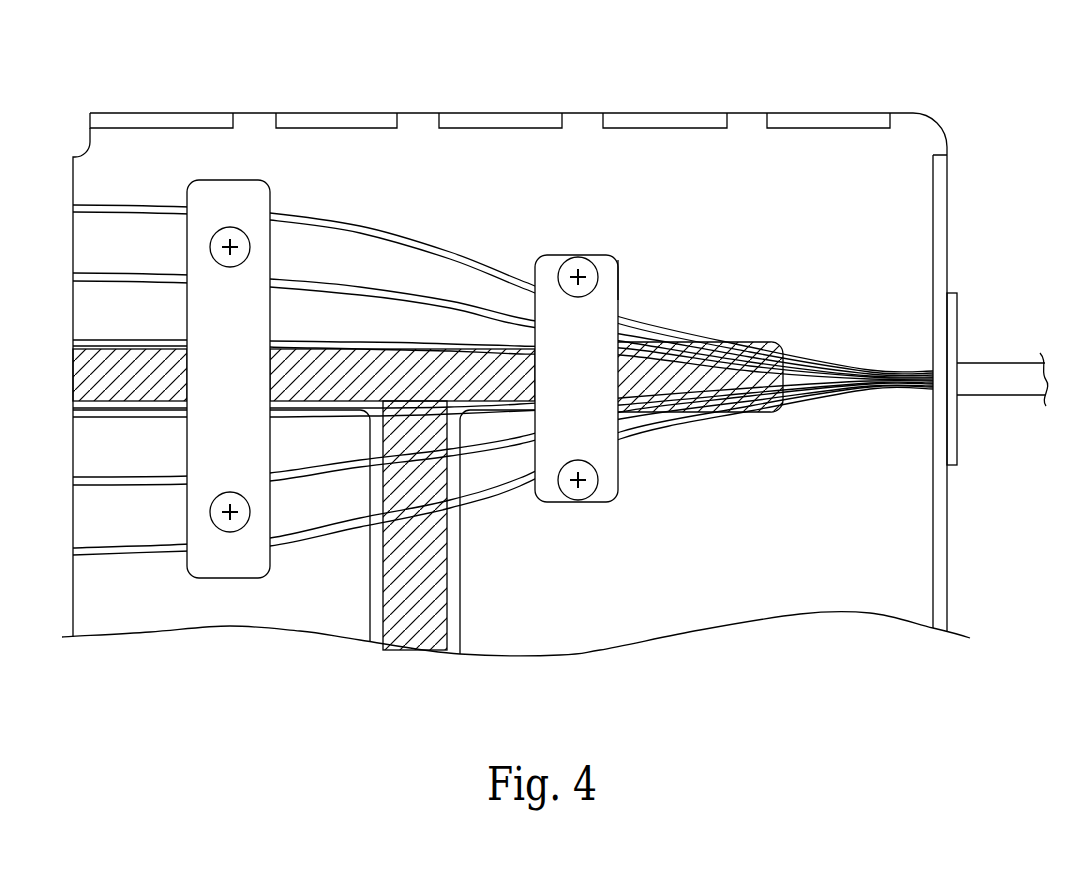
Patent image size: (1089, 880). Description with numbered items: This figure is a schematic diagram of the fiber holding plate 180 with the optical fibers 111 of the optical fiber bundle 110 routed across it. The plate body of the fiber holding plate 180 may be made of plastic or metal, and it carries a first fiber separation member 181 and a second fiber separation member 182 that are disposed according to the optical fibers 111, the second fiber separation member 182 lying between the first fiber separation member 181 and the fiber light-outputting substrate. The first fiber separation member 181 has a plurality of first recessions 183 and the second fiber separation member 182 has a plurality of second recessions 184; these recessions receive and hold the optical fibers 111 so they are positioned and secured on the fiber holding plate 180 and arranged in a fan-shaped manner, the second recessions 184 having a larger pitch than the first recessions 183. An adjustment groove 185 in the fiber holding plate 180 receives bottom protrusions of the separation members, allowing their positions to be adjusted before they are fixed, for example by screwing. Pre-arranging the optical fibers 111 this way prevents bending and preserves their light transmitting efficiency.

The fiber holding plate 180 is at (937, 123).
The optical fiber bundle 110 is at (1002, 362).
The optical fibers 111 is at (872, 390).
The first fiber separation member 181 is at (620, 290).
The second fiber separation member 182 is at (272, 212).
The first recessions 183 is at (540, 283).
The second recessions 184 is at (199, 207).
The adjustment groove 185 is at (413, 634).